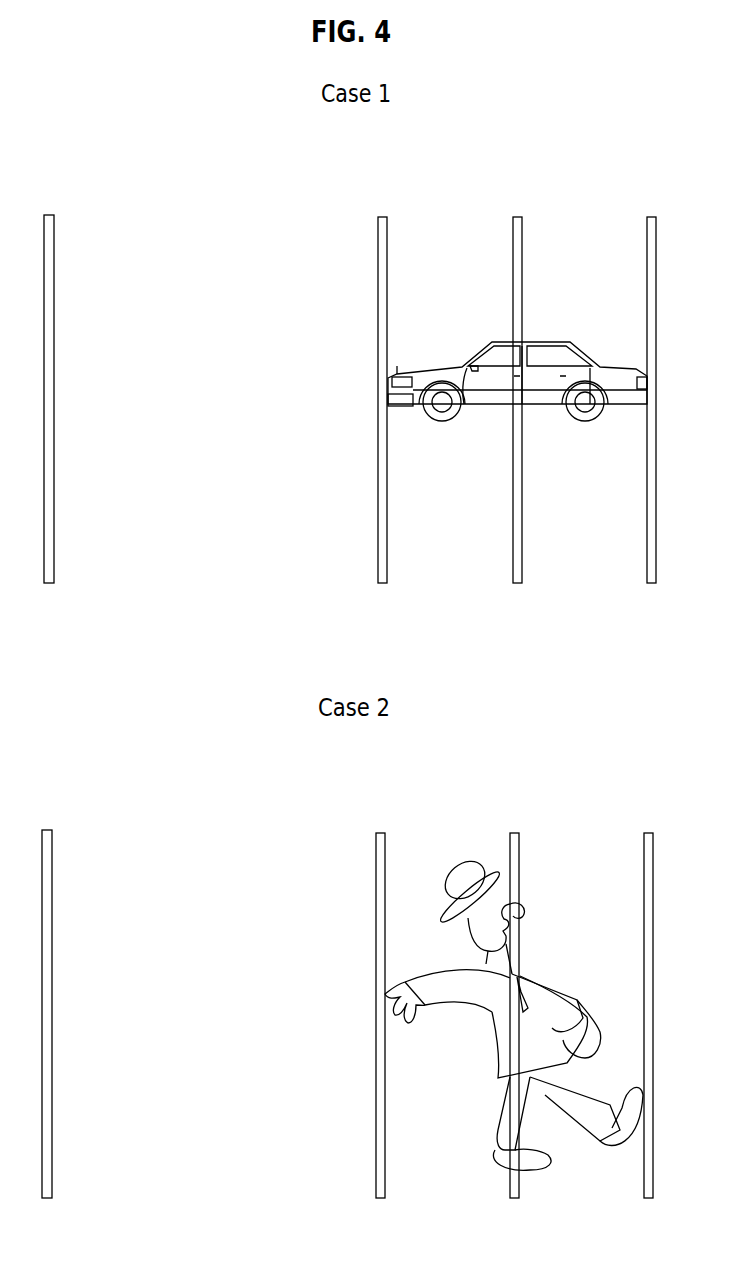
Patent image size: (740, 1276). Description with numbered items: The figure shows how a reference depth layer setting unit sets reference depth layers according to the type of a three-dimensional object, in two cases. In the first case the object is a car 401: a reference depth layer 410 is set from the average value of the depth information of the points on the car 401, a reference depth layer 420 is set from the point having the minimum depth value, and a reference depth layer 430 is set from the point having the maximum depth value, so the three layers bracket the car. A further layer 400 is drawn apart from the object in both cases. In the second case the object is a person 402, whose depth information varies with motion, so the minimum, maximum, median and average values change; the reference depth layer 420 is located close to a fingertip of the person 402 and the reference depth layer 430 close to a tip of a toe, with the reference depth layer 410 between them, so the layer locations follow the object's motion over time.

The first laser beam 400 is at (49, 215).
The reference depth layer 410 is at (517, 217).
The reference depth layer 420 is at (382, 217).
The reference depth layer 430 is at (651, 217).
The car 401 is at (615, 380).
The person 402 is at (563, 997).